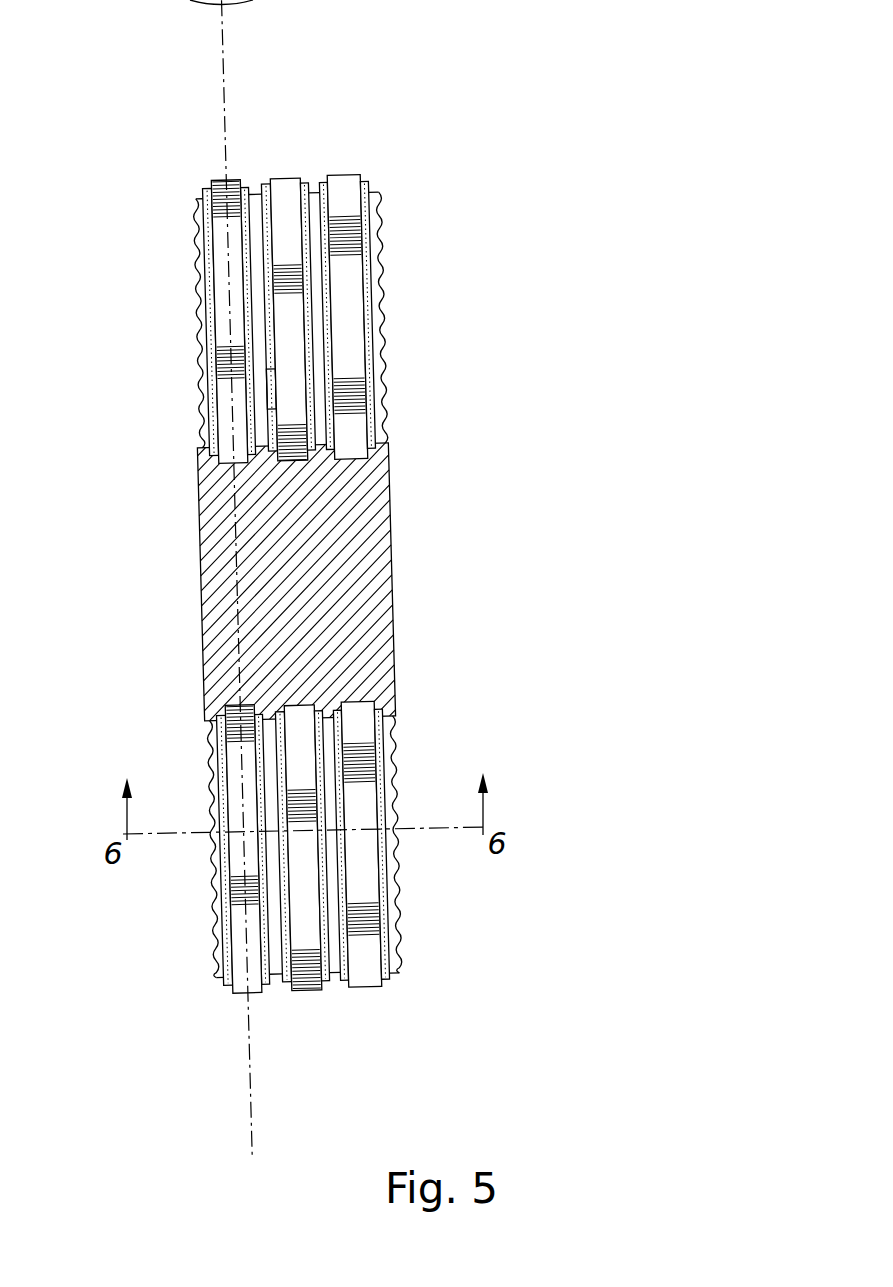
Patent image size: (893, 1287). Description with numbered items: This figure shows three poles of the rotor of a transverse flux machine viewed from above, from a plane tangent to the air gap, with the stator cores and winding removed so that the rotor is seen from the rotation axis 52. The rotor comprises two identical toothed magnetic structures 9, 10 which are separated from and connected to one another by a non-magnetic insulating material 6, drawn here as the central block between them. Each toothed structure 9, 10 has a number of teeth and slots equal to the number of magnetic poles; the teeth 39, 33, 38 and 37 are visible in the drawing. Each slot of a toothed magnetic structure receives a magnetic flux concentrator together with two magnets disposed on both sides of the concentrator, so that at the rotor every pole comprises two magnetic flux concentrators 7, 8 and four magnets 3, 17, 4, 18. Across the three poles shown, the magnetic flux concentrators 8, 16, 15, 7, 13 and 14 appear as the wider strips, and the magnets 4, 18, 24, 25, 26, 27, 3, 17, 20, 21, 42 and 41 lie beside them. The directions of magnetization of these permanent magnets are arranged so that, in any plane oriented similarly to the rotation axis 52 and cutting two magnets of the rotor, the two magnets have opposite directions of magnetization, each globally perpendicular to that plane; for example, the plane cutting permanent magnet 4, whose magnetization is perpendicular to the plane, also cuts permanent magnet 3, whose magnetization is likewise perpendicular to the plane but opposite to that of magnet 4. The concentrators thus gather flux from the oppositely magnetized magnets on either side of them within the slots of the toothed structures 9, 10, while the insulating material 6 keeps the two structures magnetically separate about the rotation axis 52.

The permanent magnet 3 is at (227, 943).
The permanent magnet 4 is at (210, 227).
The non-magnetic insulating material 6 is at (270, 535).
The magnetic flux concentrator 7 is at (233, 993).
The magnetic flux concentrator 8 is at (213, 180).
The toothed magnetic structure 9 is at (337, 732).
The toothed magnetic structure 10 is at (318, 353).
The magnetic flux concentrator 13 is at (302, 990).
The magnetic flux concentrator 14 is at (367, 962).
The magnetic flux concentrator 15 is at (345, 203).
The magnetic flux concentrator 16 is at (287, 197).
The permanent magnet 17 is at (267, 925).
The permanent magnet 18 is at (243, 255).
The permanent magnet 20 is at (287, 980).
The permanent magnet 21 is at (327, 988).
The permanent magnet 24 is at (270, 187).
The permanent magnet 25 is at (307, 187).
The permanent magnet 26 is at (325, 187).
The permanent magnet 27 is at (363, 243).
The tooth 33 is at (307, 297).
The tooth 37 is at (325, 910).
The tooth 38 is at (277, 962).
The tooth 39 is at (267, 387).
The permanent magnet 41 is at (382, 940).
The permanent magnet 42 is at (350, 983).
The rotation axis 52 is at (248, 1113).